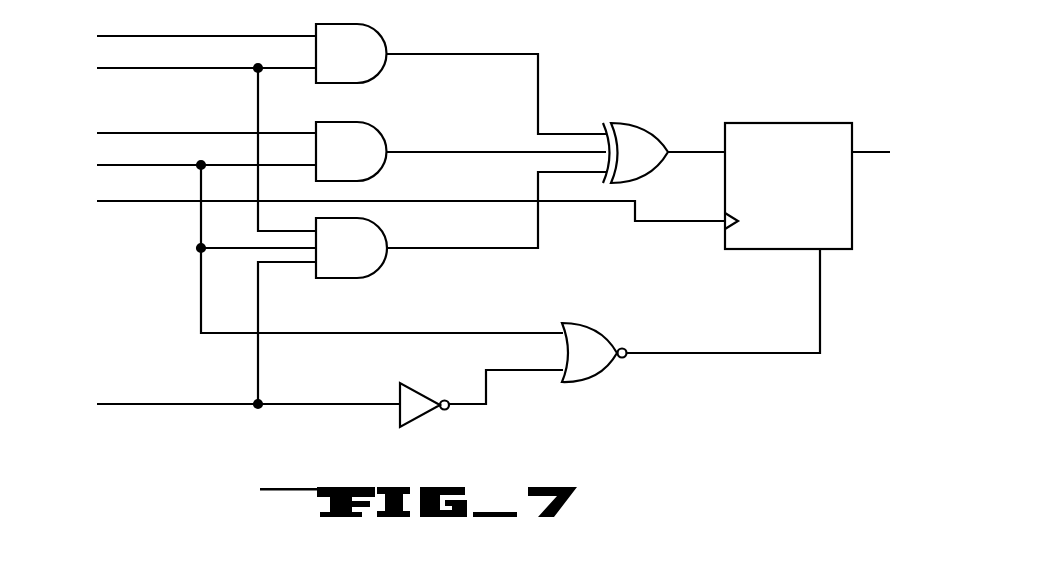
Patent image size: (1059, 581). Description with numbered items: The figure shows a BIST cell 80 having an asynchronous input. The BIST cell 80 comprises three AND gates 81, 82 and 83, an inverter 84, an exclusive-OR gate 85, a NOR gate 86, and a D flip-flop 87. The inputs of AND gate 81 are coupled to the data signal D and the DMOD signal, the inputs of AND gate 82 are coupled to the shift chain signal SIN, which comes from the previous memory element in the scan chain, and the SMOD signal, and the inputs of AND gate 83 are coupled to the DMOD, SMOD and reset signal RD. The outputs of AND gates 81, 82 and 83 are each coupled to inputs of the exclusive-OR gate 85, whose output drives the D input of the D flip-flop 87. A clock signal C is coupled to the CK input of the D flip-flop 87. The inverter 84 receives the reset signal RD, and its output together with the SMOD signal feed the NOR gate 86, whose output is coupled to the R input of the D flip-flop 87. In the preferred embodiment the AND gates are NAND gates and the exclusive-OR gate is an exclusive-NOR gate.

The BIST cell 80 is at (690, 39).
The AND gate 81 is at (359, 65).
The AND gate 82 is at (359, 163).
The AND gate 83 is at (359, 260).
The inverter 84 is at (418, 416).
The exclusive-OR gate 85 is at (649, 164).
The NOR gate 86 is at (599, 364).
The D flip-flop 87 is at (799, 182).